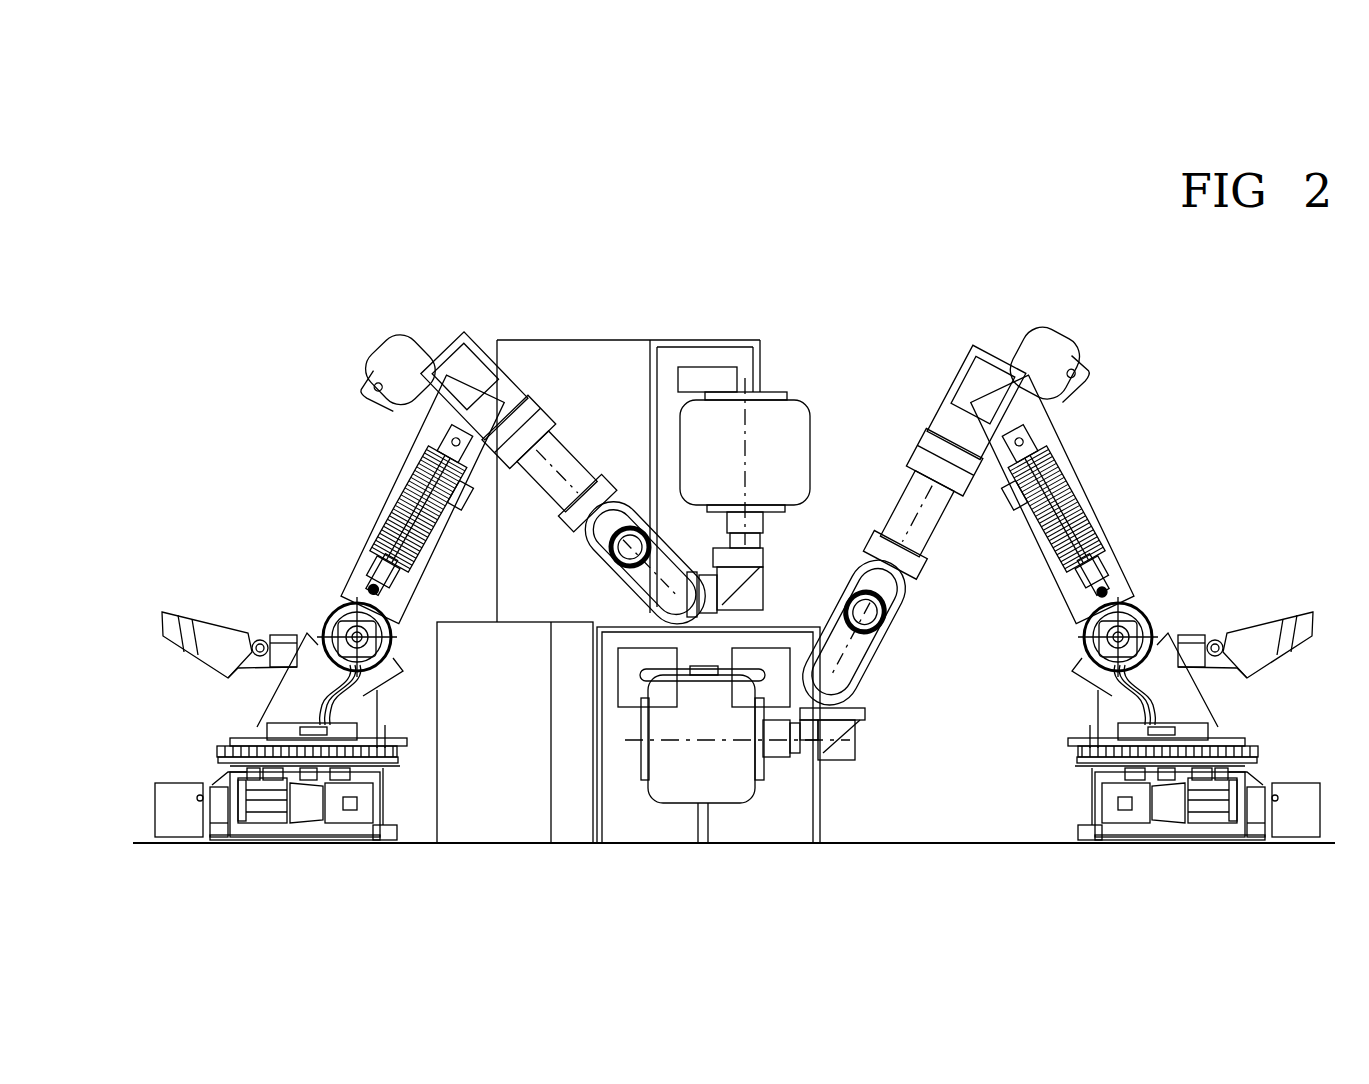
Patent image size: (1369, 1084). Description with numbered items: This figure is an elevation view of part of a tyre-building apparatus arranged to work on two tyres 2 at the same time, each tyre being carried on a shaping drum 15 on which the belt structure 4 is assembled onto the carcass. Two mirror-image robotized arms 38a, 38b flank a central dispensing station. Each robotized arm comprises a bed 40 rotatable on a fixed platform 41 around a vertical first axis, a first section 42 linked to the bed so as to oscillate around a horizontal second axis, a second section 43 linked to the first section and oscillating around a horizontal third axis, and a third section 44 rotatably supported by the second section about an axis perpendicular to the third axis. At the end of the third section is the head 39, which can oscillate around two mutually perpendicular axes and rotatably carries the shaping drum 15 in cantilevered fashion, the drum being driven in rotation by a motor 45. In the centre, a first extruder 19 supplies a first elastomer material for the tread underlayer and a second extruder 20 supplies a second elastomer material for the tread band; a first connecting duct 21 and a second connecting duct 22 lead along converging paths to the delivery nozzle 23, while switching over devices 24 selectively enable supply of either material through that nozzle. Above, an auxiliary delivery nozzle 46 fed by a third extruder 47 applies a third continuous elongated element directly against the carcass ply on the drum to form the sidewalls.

The tyre 2 is at (677, 803).
The belt structure 4 is at (515, 398).
The shaping drum 15 is at (775, 392).
The first extruder 19 is at (786, 657).
The second extruder 20 is at (617, 696).
The first connecting duct 21 is at (755, 681).
The second connecting duct 22 is at (643, 672).
The delivery nozzle 23 is at (635, 698).
The switching over devices 24 is at (684, 660).
The robotized arm 38a is at (1118, 546).
The robotized arm 38b is at (362, 548).
The end head 39 is at (720, 552).
The bed 40 is at (1177, 708).
The fixed platform 41 is at (214, 782).
The first section 42 is at (1113, 575).
The second section 43 is at (957, 428).
The third section 44 is at (568, 470).
The motor 45 is at (757, 598).
The auxiliary delivery nozzle 46 is at (700, 396).
The third extruder 47 is at (678, 367).